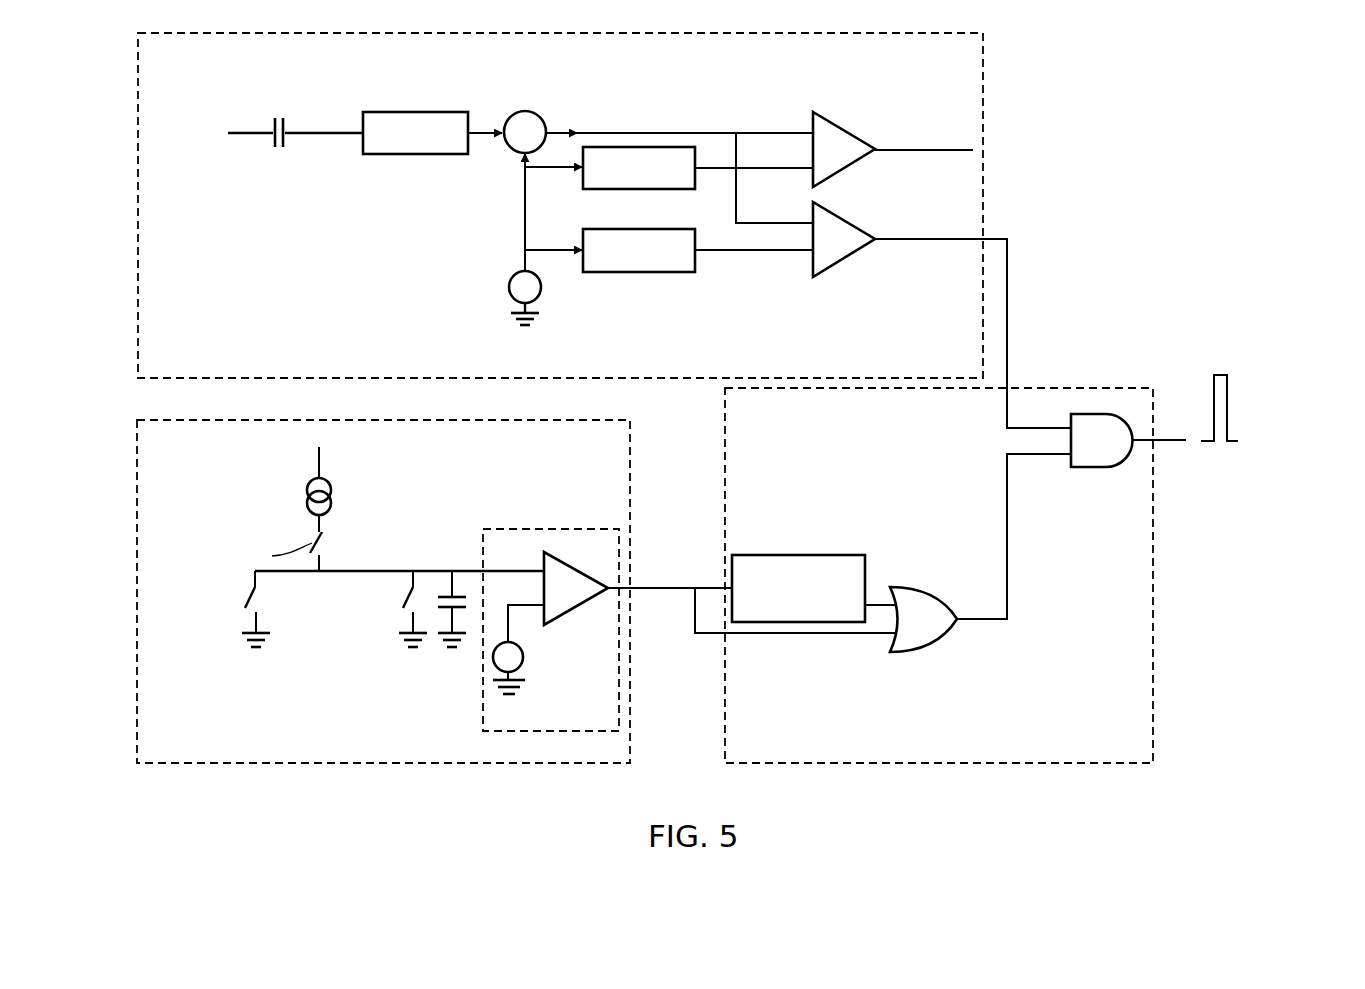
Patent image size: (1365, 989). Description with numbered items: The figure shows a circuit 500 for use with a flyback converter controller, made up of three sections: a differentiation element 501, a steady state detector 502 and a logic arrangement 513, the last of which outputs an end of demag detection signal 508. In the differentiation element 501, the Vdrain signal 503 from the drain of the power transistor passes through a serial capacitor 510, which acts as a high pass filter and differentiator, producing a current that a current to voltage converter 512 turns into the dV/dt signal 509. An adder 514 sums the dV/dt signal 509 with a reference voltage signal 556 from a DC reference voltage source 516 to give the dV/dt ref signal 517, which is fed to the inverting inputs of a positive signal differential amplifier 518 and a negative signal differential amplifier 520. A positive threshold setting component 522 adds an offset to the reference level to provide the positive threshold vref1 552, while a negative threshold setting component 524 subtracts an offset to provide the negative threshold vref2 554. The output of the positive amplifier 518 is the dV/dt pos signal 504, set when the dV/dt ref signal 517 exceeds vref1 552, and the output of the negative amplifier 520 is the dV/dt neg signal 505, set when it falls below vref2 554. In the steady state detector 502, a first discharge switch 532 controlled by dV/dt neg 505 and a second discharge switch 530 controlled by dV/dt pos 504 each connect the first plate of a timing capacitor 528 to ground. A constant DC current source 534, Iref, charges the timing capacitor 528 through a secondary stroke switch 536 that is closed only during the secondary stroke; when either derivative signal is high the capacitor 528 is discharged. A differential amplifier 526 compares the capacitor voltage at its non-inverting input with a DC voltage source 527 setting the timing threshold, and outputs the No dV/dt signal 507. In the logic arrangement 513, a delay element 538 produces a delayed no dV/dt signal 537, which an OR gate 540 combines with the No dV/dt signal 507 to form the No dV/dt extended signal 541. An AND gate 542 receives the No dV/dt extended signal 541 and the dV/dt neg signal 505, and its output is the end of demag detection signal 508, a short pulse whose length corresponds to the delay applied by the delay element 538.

The circuit 500 is at (1114, 198).
The differentiation element 501 is at (983, 76).
The steady state detector 502 is at (277, 763).
The Vdrain signal 503 is at (256, 130).
The positive derivative signal (dV/dt pos) 504 is at (927, 152).
The negative derivative signal (dV/dt neg) 505 is at (937, 243).
The zero derivative signal (No dV/dt) 507 is at (683, 592).
The end of demag detection signal 508 is at (1171, 443).
The dV/dt signal 509 is at (477, 127).
The serial capacitor 510 is at (282, 152).
The current to voltage converter 512 is at (415, 155).
The logic arrangement 513 is at (1072, 763).
The adder 514 is at (525, 111).
The DC reference voltage source 516 is at (542, 293).
The dV/dt ref signal 517 is at (648, 130).
The positive signal differential amplifier 518 is at (837, 123).
The negative signal differential amplifier 520 is at (842, 223).
The positive threshold setting component 522 is at (615, 189).
The negative threshold setting component 524 is at (632, 272).
The differential amplifier 526 is at (573, 563).
The DC voltage source 527 is at (520, 667).
The timing capacitor 528 is at (453, 597).
The second discharge switch 530 is at (413, 595).
The first discharge switch 532 is at (258, 590).
The constant DC current source 534 is at (312, 488).
The secondary stroke switch 536 is at (330, 542).
The delayed no dV/dt signal 537 is at (872, 602).
The delay element 538 is at (787, 555).
The OR gate 540 is at (927, 647).
The No dV/dt extended signal 541 is at (1007, 530).
The AND gate 542 is at (1087, 467).
The positive threshold (vref1) 552 is at (742, 168).
The negative threshold (vref2) 554 is at (727, 250).
The reference voltage signal 556 is at (520, 202).